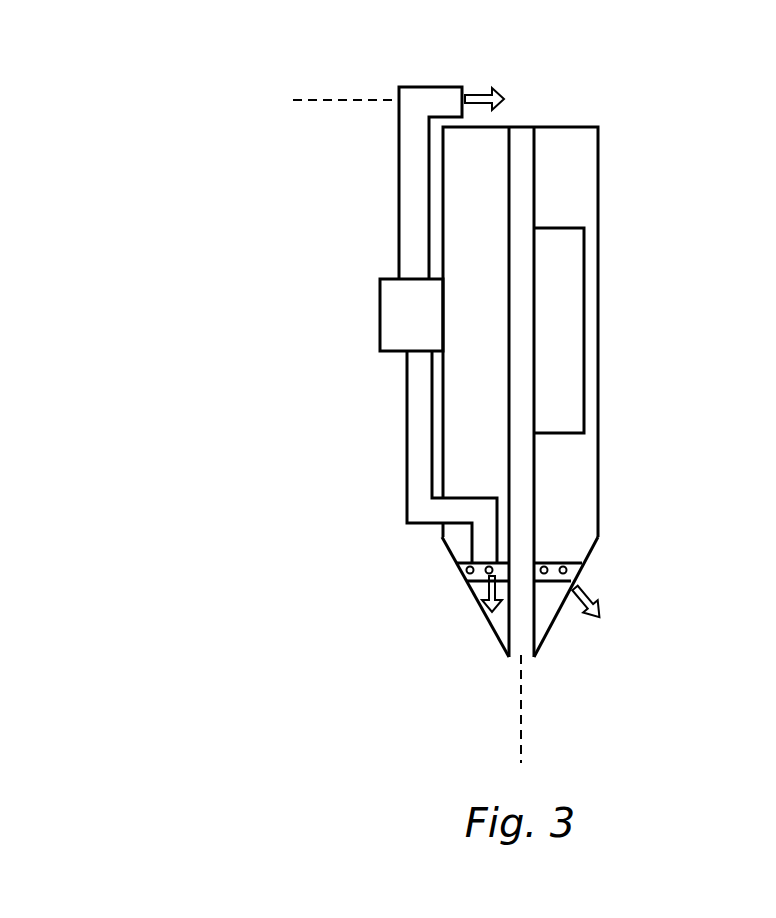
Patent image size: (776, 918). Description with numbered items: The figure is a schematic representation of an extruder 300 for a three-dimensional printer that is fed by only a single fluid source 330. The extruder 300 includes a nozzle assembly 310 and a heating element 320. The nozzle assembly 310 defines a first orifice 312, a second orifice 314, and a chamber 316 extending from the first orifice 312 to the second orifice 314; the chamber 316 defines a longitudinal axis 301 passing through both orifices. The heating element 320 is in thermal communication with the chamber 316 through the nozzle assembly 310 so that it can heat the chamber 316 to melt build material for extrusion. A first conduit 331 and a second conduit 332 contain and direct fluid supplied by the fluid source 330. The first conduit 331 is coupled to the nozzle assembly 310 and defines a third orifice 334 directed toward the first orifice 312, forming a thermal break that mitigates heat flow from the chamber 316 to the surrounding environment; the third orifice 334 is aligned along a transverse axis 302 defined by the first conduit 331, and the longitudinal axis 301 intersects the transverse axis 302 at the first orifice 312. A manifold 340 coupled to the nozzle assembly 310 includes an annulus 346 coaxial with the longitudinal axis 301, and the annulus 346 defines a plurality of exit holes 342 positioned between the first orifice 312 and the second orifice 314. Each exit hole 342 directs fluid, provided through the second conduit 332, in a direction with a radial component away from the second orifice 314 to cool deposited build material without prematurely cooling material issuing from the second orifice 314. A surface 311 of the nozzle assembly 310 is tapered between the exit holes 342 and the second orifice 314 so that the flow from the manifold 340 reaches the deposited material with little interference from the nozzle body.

The extruder 300 is at (153, 70).
The longitudinal axis 301 is at (522, 720).
The transverse axis 302 is at (334, 100).
The nozzle assembly 310 is at (598, 488).
The surface 311 is at (553, 625).
The first orifice 312 is at (522, 135).
The second orifice 314 is at (512, 658).
The chamber 316 is at (537, 478).
The heating element 320 is at (565, 255).
The fluid source 330 is at (380, 303).
The first conduit 331 is at (399, 171).
The second conduit 332 is at (407, 437).
The third orifice 334 is at (463, 87).
The manifold 340 is at (614, 565).
The exit hole 342 is at (567, 570).
The annulus 346 is at (462, 578).